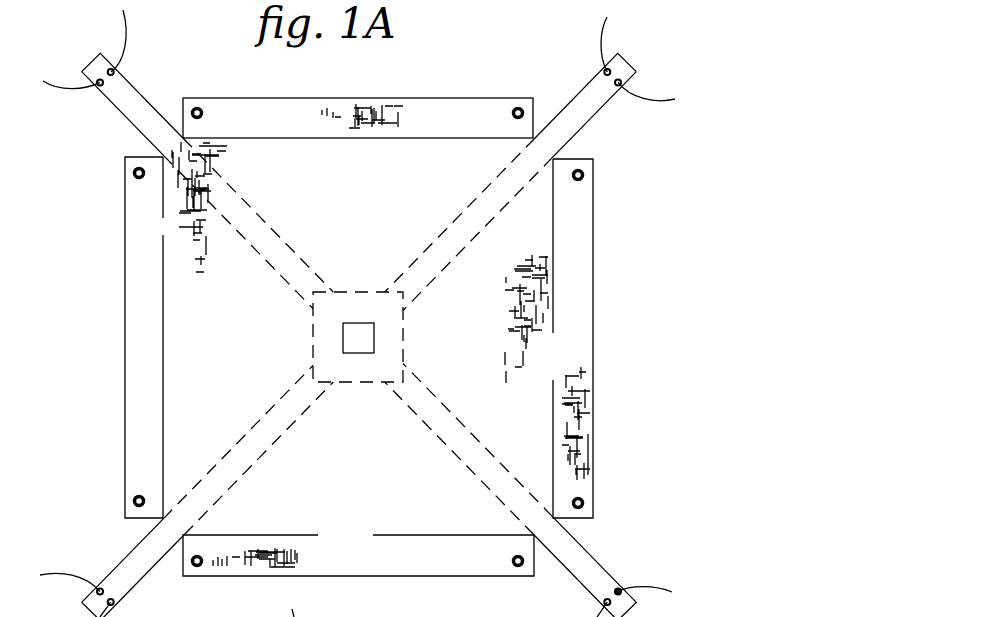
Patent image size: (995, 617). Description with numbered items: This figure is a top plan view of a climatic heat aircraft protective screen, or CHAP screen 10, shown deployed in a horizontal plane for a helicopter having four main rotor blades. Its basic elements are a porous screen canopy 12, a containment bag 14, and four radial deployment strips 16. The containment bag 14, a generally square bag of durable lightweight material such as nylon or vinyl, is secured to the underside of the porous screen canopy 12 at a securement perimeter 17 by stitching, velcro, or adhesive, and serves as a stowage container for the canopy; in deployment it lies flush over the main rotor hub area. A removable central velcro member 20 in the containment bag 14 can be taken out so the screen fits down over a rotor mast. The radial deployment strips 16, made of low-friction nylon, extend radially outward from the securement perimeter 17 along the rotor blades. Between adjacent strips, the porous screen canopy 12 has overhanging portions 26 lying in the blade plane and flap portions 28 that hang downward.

The CHAP screen 10 is at (623, 351).
The porous screen canopy 12 is at (598, 252).
The containment bag 14 is at (327, 359).
The radial deployment strips 16 is at (240, 197).
The securement perimeter 17 is at (363, 323).
The central velcro member 20 is at (363, 342).
The overhanging portions 26 is at (368, 493).
The flap portions 28 is at (361, 570).